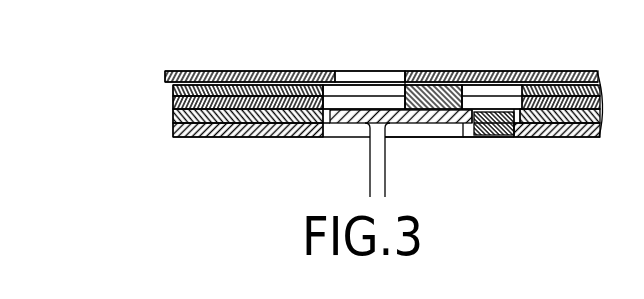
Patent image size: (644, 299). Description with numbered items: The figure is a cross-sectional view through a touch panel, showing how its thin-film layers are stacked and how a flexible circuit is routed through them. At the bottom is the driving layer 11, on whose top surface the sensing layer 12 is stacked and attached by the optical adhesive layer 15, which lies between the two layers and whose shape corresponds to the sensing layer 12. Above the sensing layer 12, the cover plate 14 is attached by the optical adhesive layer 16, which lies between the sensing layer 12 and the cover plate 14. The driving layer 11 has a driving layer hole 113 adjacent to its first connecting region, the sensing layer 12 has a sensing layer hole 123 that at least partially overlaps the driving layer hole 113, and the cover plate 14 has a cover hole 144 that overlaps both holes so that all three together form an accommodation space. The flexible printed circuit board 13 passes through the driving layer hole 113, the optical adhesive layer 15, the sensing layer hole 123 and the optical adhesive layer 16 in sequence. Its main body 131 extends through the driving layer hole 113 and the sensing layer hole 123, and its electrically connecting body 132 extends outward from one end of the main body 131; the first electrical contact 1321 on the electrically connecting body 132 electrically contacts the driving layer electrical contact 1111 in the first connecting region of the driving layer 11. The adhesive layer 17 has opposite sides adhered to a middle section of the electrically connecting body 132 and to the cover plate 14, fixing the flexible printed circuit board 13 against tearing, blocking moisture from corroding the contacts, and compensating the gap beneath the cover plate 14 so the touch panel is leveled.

The driving layer 11 is at (158, 132).
The sensing layer 12 is at (158, 105).
The flexible printed circuit board 13 is at (350, 135).
The cover plate 14 is at (155, 75).
The optical adhesive layer 15 is at (173, 115).
The optical adhesive layer 16 is at (173, 90).
The adhesive layer 17 is at (428, 63).
The driving layer hole 113 is at (454, 132).
The sensing layer hole 123 is at (355, 98).
The main body 131 is at (370, 192).
The electrically connecting body 132 is at (418, 125).
The cover hole 144 is at (392, 71).
The driving layer electrical contact 1111 is at (495, 136).
The first electrical contact 1321 is at (497, 102).